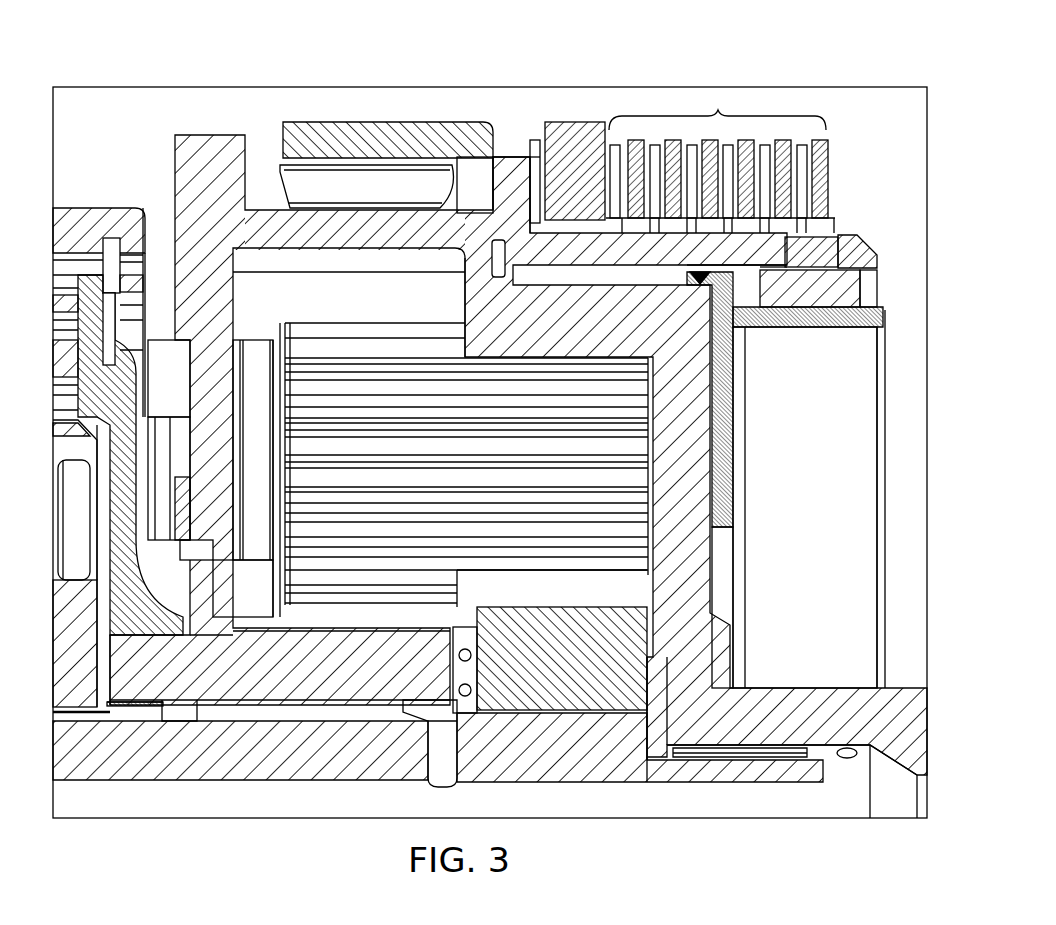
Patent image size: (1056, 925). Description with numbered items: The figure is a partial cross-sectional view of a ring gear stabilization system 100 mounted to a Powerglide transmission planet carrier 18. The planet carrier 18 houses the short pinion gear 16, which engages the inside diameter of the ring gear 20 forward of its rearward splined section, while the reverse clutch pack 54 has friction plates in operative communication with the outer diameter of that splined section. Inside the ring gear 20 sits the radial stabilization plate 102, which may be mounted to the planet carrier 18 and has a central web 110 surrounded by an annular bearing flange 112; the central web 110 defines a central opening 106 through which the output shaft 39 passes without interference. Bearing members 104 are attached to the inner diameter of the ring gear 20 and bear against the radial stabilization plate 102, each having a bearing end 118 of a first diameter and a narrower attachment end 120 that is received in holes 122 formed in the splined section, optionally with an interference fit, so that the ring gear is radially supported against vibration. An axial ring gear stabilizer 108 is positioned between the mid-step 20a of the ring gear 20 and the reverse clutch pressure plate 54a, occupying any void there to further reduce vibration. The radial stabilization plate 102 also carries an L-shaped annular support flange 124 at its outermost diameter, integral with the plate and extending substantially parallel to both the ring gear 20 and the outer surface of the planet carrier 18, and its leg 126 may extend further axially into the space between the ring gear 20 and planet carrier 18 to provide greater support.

The short pinion gear 16 is at (373, 338).
The planet carrier 18 is at (204, 162).
The ring gear 20 is at (379, 132).
The mid-step 20a is at (512, 182).
The output shaft 39 is at (913, 731).
The reverse clutch pack 54 is at (718, 112).
The reverse clutch pressure plate 54a is at (578, 147).
The ring gear stabilization system 100 is at (960, 356).
The radial stabilization plate 102 is at (842, 424).
The bearing members 104 is at (866, 282).
The central opening 106 is at (745, 563).
The axial ring gear stabilizer 108 is at (533, 140).
The central web 110 is at (723, 474).
The annular bearing flange 112 is at (880, 312).
The bearing end 118 is at (848, 280).
The attachment end 120 is at (820, 247).
The holes 122 is at (860, 240).
The annular support flange 124 is at (773, 267).
The leg 126 is at (700, 280).